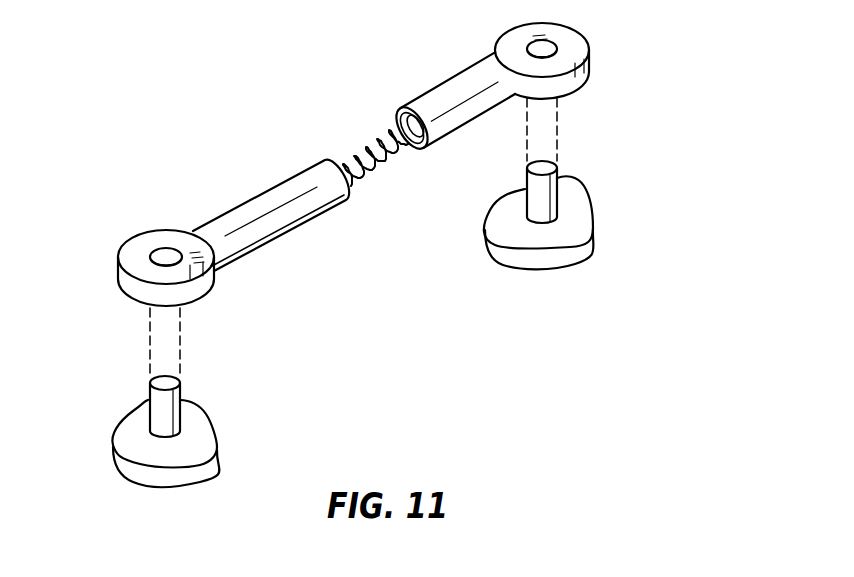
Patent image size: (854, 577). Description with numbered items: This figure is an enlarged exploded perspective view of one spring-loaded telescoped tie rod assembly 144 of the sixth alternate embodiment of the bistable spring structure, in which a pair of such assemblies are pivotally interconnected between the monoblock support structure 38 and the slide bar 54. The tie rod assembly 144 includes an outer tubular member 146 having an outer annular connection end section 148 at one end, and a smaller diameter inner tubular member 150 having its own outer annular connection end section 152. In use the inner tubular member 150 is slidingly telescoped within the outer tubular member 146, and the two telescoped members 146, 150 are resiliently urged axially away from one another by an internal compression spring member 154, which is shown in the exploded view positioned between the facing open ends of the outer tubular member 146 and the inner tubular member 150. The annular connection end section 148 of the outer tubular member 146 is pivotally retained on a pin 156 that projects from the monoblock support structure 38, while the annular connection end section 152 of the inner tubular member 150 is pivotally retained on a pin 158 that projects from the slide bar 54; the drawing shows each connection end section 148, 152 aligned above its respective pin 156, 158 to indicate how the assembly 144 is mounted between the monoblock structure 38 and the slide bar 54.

The spring-loaded telescoped tie rod assembly 144 is at (341, 103).
The outer tubular member 146 is at (277, 197).
The outer annular connection end section 148 is at (145, 231).
The inner tubular member 150 is at (462, 70).
The outer annular connection end section 152 is at (578, 51).
The internal compression spring member 154 is at (389, 152).
The pin 156 is at (173, 410).
The pin 158 is at (542, 195).
The monoblock support structure 38 is at (198, 446).
The slide bar 54 is at (556, 242).